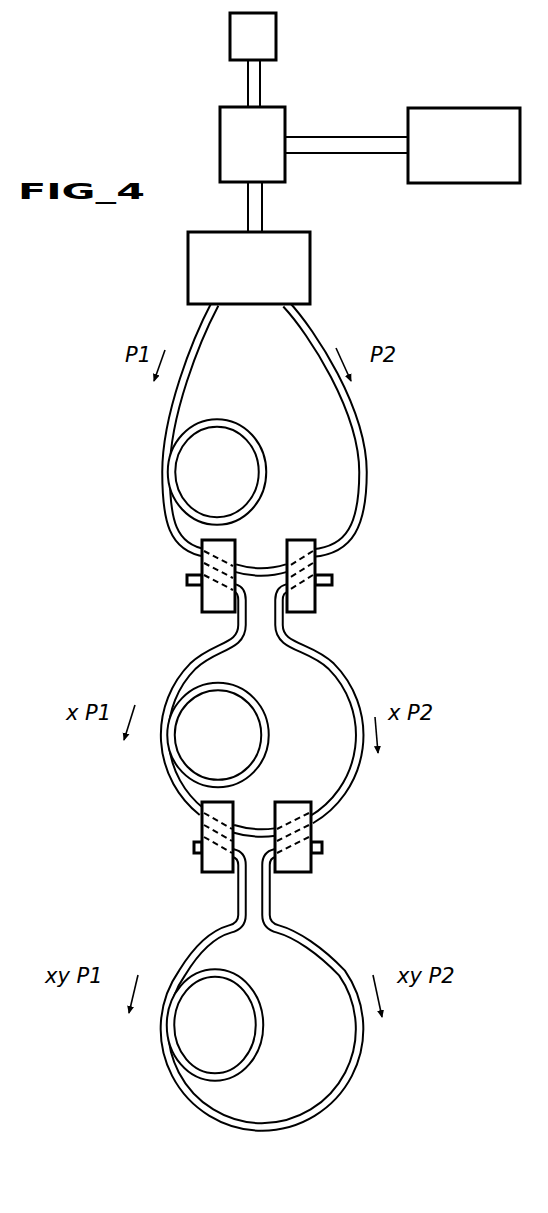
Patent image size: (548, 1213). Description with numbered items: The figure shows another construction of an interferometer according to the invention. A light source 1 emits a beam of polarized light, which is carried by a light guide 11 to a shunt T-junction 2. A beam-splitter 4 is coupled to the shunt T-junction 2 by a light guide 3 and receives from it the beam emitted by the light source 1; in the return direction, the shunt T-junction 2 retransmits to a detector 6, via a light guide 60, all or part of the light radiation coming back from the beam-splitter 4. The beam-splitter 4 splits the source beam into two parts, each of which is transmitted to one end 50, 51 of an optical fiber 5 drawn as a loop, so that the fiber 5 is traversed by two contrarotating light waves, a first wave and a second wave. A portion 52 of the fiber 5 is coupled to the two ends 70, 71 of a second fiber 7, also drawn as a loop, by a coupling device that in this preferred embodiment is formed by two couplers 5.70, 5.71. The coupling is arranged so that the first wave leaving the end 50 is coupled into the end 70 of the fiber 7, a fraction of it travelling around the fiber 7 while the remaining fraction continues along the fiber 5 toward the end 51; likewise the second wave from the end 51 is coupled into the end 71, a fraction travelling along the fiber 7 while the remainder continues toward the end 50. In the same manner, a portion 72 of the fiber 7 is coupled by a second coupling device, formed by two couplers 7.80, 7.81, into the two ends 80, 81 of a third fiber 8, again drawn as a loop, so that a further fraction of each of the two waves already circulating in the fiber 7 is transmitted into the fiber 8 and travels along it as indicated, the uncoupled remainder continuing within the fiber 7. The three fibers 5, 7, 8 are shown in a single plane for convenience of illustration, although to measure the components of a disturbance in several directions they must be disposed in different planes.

The light source 1 is at (278, 45).
The light guide 11 is at (248, 97).
The shunt T-junction 2 is at (212, 148).
The light guide 60 is at (325, 137).
The detector 6 is at (475, 108).
The light guide 3 is at (263, 220).
The beam-splitter 4 is at (313, 278).
The fiber end 50 is at (218, 306).
The fiber end 51 is at (285, 307).
The optical fiber 5 is at (267, 473).
The portion of the fiber 52 is at (258, 563).
The coupler 5.70 is at (202, 565).
The coupler 5.71 is at (315, 565).
The fiber end 70 is at (245, 618).
The fiber end 71 is at (277, 618).
The fiber 7 is at (262, 721).
The portion of the fiber 72 is at (257, 833).
The coupler 7.80 is at (202, 835).
The coupler 7.81 is at (312, 835).
The fiber end 80 is at (240, 877).
The fiber end 81 is at (273, 880).
The fiber 8 is at (257, 1047).